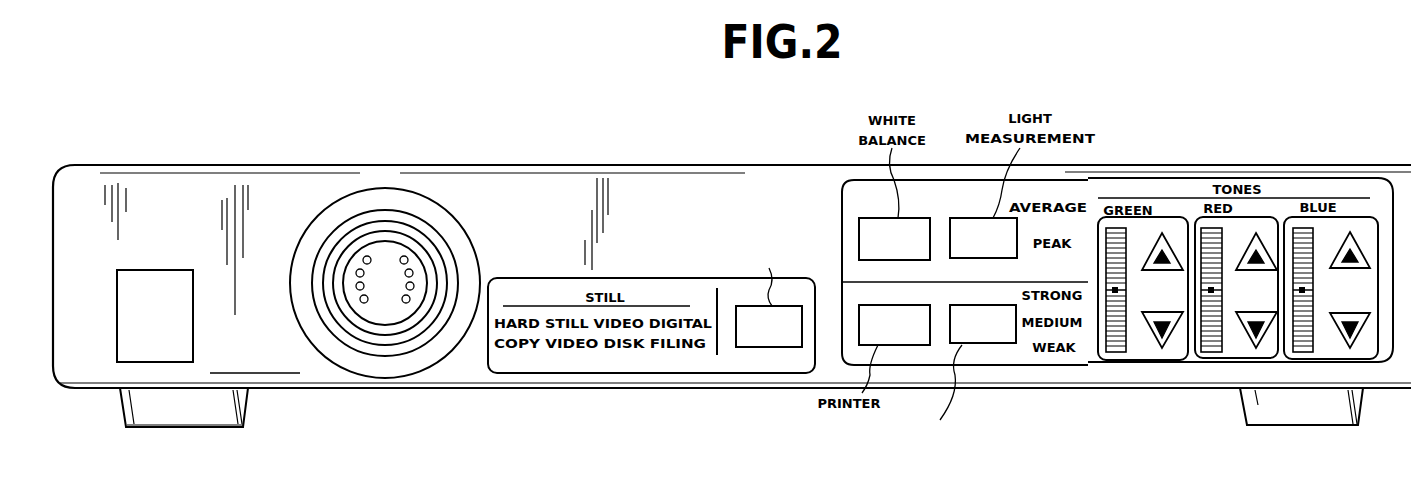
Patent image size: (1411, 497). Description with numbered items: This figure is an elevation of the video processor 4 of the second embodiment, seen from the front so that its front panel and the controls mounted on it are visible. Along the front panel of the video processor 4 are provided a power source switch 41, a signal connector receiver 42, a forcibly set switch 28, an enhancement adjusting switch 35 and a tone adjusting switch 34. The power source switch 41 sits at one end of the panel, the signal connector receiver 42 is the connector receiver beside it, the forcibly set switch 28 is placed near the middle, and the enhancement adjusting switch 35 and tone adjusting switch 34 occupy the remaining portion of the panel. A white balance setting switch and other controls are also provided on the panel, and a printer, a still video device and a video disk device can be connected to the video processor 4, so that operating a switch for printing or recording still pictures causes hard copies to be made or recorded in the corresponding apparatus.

The video processor 4 is at (808, 165).
The power source switch 41 is at (122, 364).
The signal connector receiver 42 is at (391, 368).
The forcibly set switch 28 is at (775, 347).
The enhancement adjusting switch 35 is at (992, 345).
The tone adjusting switch 34 is at (1340, 338).